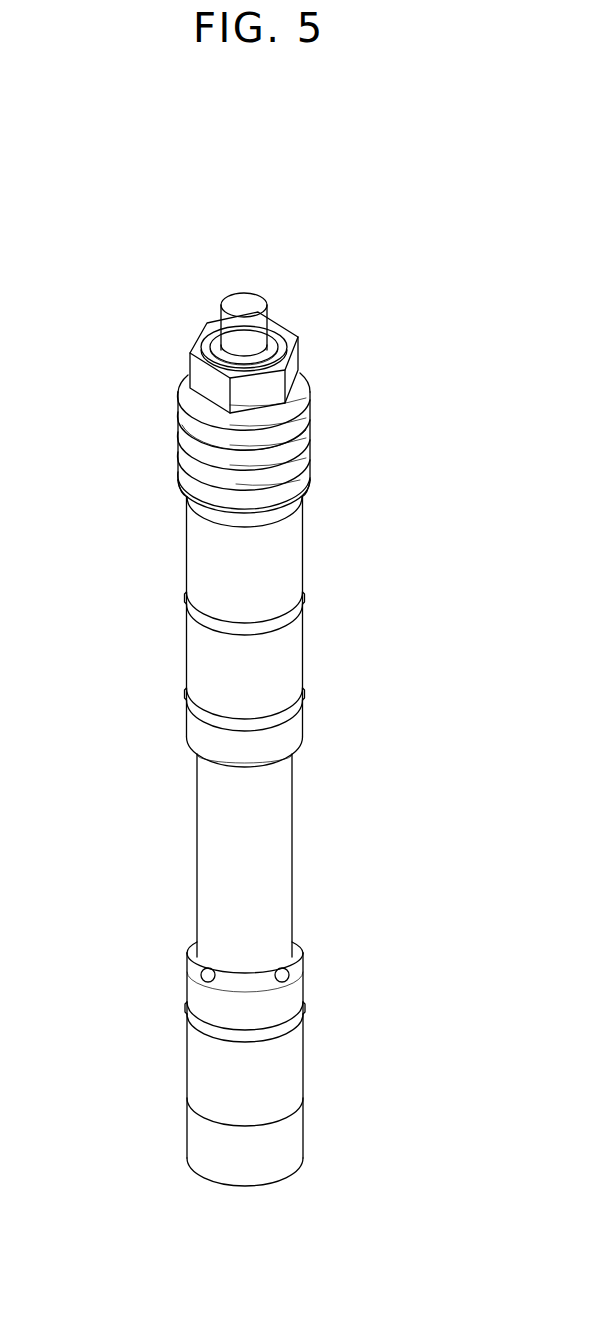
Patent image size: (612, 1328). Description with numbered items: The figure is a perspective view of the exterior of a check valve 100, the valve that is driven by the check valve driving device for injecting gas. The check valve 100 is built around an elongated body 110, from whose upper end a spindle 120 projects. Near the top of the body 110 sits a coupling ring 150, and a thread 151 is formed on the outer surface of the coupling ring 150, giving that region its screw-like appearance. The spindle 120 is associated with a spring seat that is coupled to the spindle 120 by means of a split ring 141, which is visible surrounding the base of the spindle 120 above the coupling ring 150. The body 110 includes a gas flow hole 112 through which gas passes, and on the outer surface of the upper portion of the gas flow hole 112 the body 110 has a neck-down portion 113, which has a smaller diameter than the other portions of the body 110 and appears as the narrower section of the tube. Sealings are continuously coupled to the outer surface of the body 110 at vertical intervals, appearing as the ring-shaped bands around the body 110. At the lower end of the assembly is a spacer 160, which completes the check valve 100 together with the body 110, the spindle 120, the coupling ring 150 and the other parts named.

The check valve 100 is at (140, 317).
The body 110 is at (303, 542).
The gas flow hole 112 is at (288, 973).
The neck-down portion 113 is at (273, 862).
The spindle 120 is at (272, 295).
The split ring 141 is at (271, 347).
The coupling ring 150 is at (312, 442).
The thread 151 is at (297, 457).
The spacer 160 is at (303, 1140).